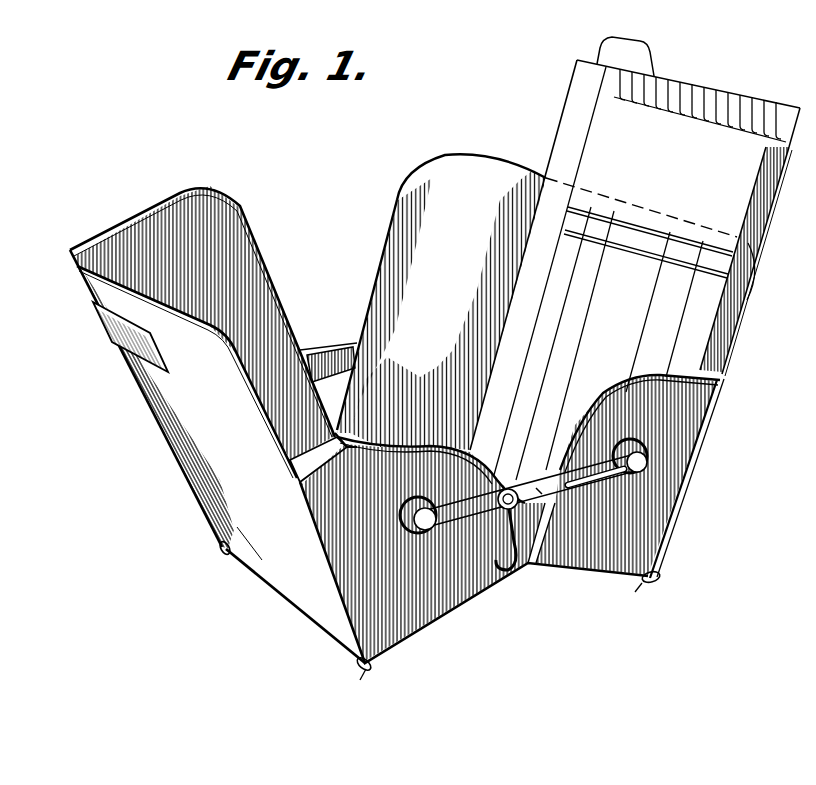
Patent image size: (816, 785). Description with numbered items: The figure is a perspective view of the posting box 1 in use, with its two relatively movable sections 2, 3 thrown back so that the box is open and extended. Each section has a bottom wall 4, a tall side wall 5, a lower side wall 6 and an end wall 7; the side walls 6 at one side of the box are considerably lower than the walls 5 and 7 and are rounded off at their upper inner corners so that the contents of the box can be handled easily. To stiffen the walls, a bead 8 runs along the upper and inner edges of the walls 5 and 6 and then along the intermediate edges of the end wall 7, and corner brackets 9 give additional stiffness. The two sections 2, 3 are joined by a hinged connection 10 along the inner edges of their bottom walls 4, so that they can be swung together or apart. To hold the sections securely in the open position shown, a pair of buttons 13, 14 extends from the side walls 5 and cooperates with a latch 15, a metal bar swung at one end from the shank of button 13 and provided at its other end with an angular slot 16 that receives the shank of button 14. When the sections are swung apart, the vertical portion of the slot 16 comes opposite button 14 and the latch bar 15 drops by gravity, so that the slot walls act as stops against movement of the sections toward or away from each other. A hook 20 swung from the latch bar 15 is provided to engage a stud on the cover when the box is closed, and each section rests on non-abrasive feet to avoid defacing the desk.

The box 1 is at (363, 246).
The box section 2 is at (668, 547).
The box section 3 is at (281, 581).
The bottom wall 4 is at (367, 443).
The side wall 5 is at (198, 212).
The side wall 6 is at (463, 590).
The end wall 7 is at (743, 319).
The bead 8 is at (472, 448).
The corner bracket 9 is at (124, 352).
The hinged connection 10 is at (347, 420).
The button 13 is at (432, 518).
The button 14 is at (647, 457).
The latch 15 is at (333, 357).
The angular slot 16 is at (584, 485).
The hook 20 is at (510, 575).